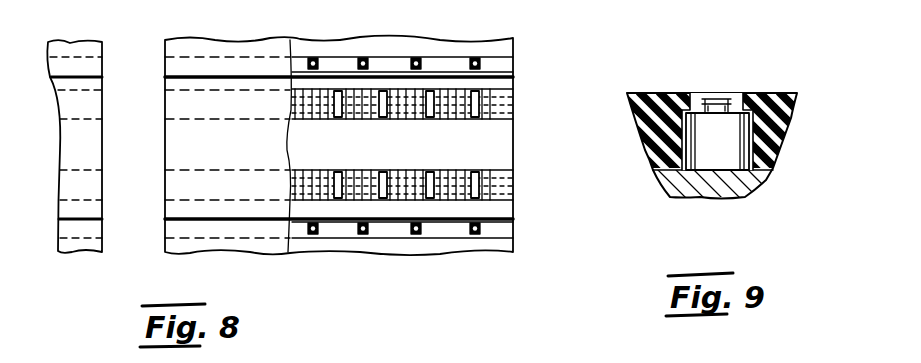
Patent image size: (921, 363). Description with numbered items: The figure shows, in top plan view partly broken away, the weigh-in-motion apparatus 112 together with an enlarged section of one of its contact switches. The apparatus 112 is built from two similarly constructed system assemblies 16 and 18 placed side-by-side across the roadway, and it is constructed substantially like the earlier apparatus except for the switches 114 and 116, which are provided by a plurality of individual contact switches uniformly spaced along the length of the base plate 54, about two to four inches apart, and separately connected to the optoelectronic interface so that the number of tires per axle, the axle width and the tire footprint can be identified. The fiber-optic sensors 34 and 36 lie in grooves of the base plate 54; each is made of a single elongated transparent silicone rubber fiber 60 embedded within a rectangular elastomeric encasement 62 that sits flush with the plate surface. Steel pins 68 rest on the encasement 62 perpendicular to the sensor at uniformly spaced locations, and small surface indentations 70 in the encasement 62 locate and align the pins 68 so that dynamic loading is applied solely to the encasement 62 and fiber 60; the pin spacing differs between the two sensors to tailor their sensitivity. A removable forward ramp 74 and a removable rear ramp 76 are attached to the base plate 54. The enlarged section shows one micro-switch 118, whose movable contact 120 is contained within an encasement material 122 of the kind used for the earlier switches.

In FIG. 8, the system assembly 16 is at (192, 148).
In FIG. 8, the system assembly 18 is at (78, 142).
In FIG. 8, the fiber-optic sensor 34 is at (498, 168).
In FIG. 8, the fiber-optic sensor 36 is at (498, 124).
In FIG. 8, the base plate 54 is at (505, 206).
In FIG. 8, the elongated fiber 60 is at (494, 96).
In FIG. 8, the elastomeric encasement 62 is at (293, 168).
In FIG. 8, the pin 68 is at (386, 120).
In FIG. 8, the surface indentation 70 is at (340, 172).
In FIG. 8, the forward ramp 74 is at (186, 222).
In FIG. 9, the forward ramp 74 is at (724, 182).
In FIG. 8, the rear ramp 76 is at (182, 60).
In FIG. 8, the apparatus 112 is at (251, 250).
In FIG. 8, the switch 114 is at (417, 236).
In FIG. 9, the switch 114 is at (681, 91).
In FIG. 8, the switch 116 is at (291, 63).
In FIG. 8, the switch 118 is at (495, 63).
In FIG. 9, the switch 118 is at (706, 152).
In FIG. 9, the movable contact 120 is at (716, 94).
In FIG. 8, the encasement material 122 is at (505, 228).
In FIG. 9, the encasement material 122 is at (775, 140).